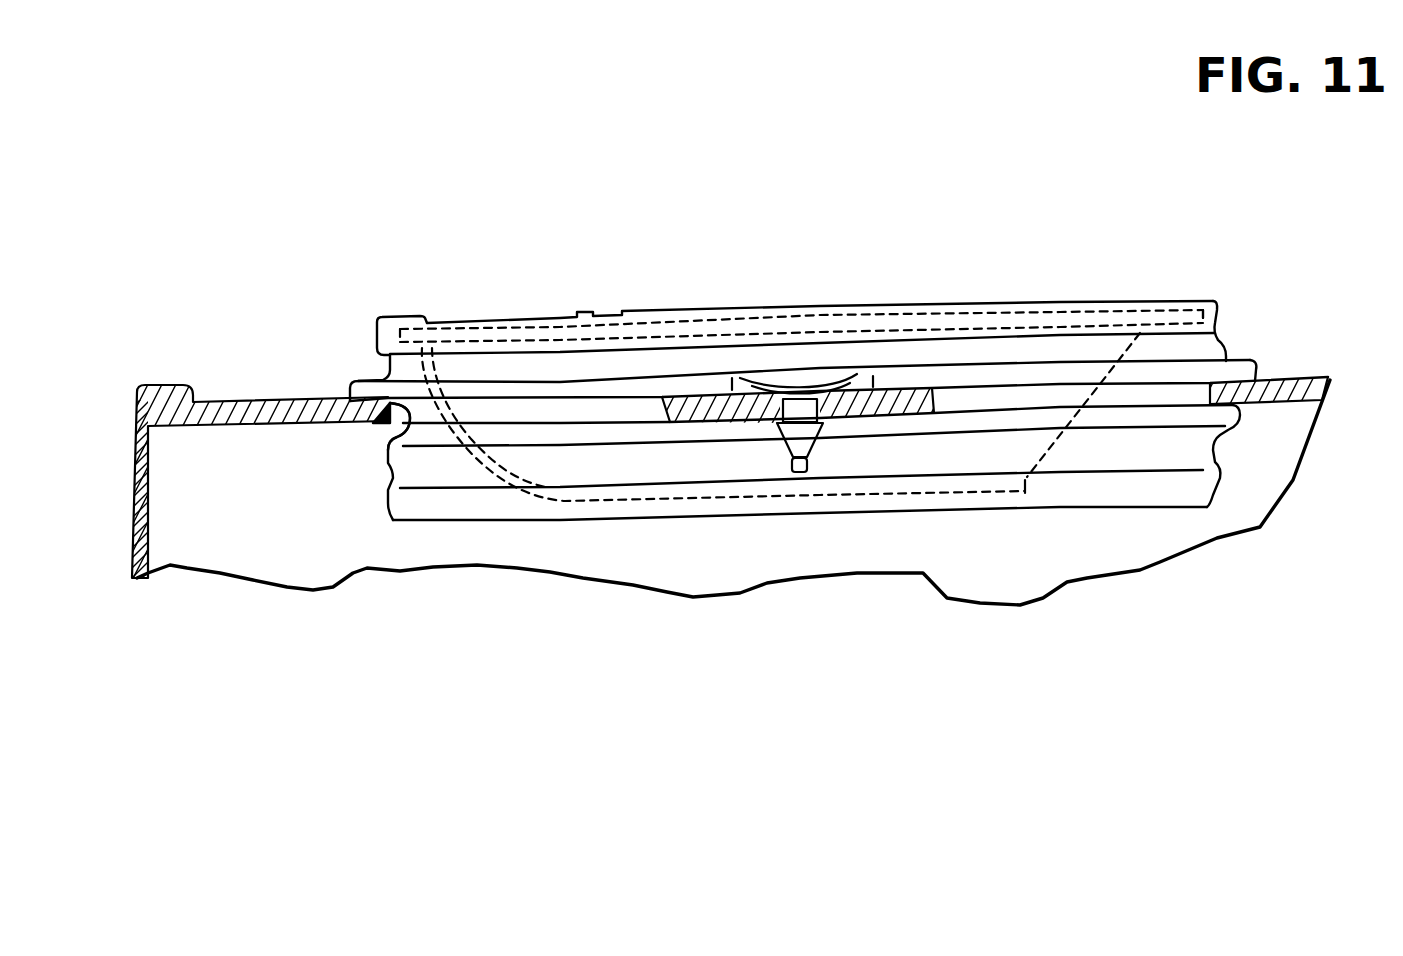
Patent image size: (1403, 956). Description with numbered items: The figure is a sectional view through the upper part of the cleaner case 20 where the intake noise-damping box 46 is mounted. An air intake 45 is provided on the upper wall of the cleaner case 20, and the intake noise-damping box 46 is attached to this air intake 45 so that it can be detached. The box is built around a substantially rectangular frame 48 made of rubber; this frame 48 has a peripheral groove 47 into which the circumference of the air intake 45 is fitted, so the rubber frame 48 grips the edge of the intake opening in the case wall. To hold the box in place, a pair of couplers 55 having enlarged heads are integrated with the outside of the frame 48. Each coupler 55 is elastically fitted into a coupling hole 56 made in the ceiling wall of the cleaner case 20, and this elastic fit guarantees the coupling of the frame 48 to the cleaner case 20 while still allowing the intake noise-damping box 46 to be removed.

The cleaner case 20 is at (888, 392).
The air intake 45 is at (398, 440).
The intake noise-damping box 46 is at (994, 290).
The peripheral groove 47 is at (1217, 470).
The frame 48 is at (1218, 317).
The coupler 55 is at (803, 433).
The coupling hole 56 is at (799, 395).